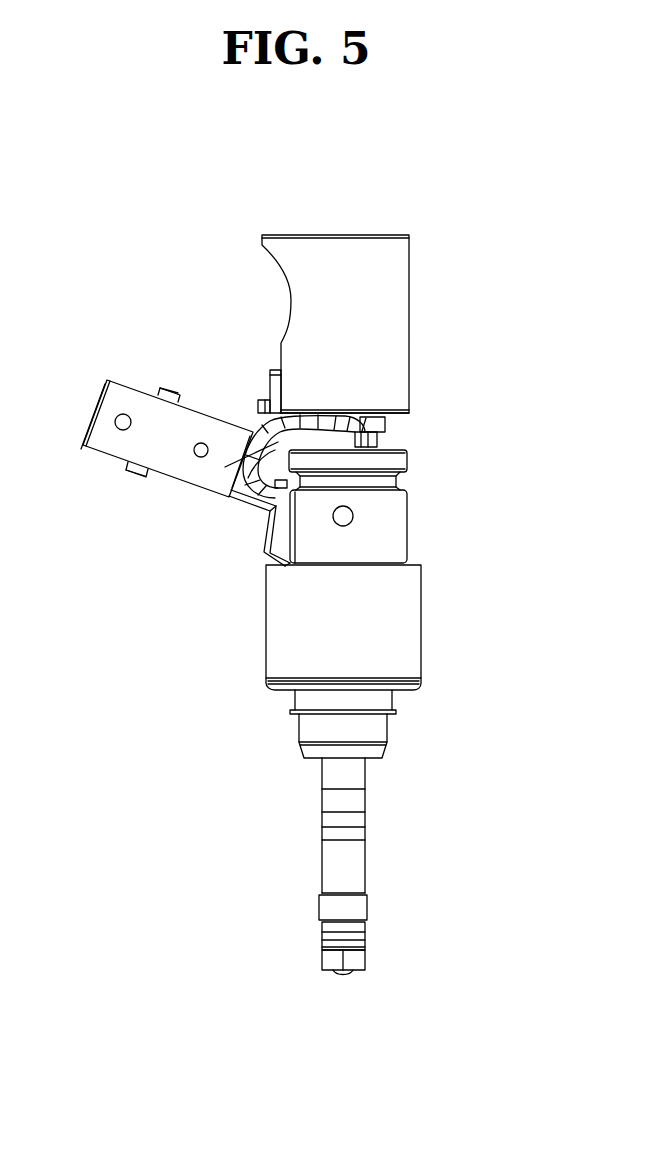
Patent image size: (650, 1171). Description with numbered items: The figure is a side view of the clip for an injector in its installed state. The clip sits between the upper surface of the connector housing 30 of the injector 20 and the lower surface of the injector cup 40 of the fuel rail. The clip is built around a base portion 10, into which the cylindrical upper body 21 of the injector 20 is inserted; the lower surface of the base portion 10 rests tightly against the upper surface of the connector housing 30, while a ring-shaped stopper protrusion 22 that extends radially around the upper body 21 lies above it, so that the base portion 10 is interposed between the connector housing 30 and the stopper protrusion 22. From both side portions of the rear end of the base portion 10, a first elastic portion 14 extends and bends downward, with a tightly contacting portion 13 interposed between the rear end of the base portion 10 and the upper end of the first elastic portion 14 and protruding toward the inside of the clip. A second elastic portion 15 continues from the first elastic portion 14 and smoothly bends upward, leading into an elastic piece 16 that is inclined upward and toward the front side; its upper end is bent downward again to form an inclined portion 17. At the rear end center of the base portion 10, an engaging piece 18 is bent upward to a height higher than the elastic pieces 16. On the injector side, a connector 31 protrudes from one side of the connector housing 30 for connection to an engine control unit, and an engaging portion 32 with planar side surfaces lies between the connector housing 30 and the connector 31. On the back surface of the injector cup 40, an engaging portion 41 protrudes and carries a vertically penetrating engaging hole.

The base portion 10 is at (340, 448).
The tightly contacting portion 13 is at (257, 461).
The first elastic portion 14 is at (270, 470).
The second elastic portion 15 is at (250, 459).
The elastic piece 16 is at (275, 385).
The inclined portion 17 is at (350, 413).
The engaging piece 18 is at (268, 387).
The injector 20 is at (410, 615).
The upper body 21 is at (378, 440).
The stopper protrusion 22 is at (385, 422).
The connector housing 30 is at (405, 525).
The connector 31 is at (130, 450).
The engaging portion 32 is at (272, 540).
The injector cup 40 is at (393, 296).
The engaging portion 41 is at (260, 404).